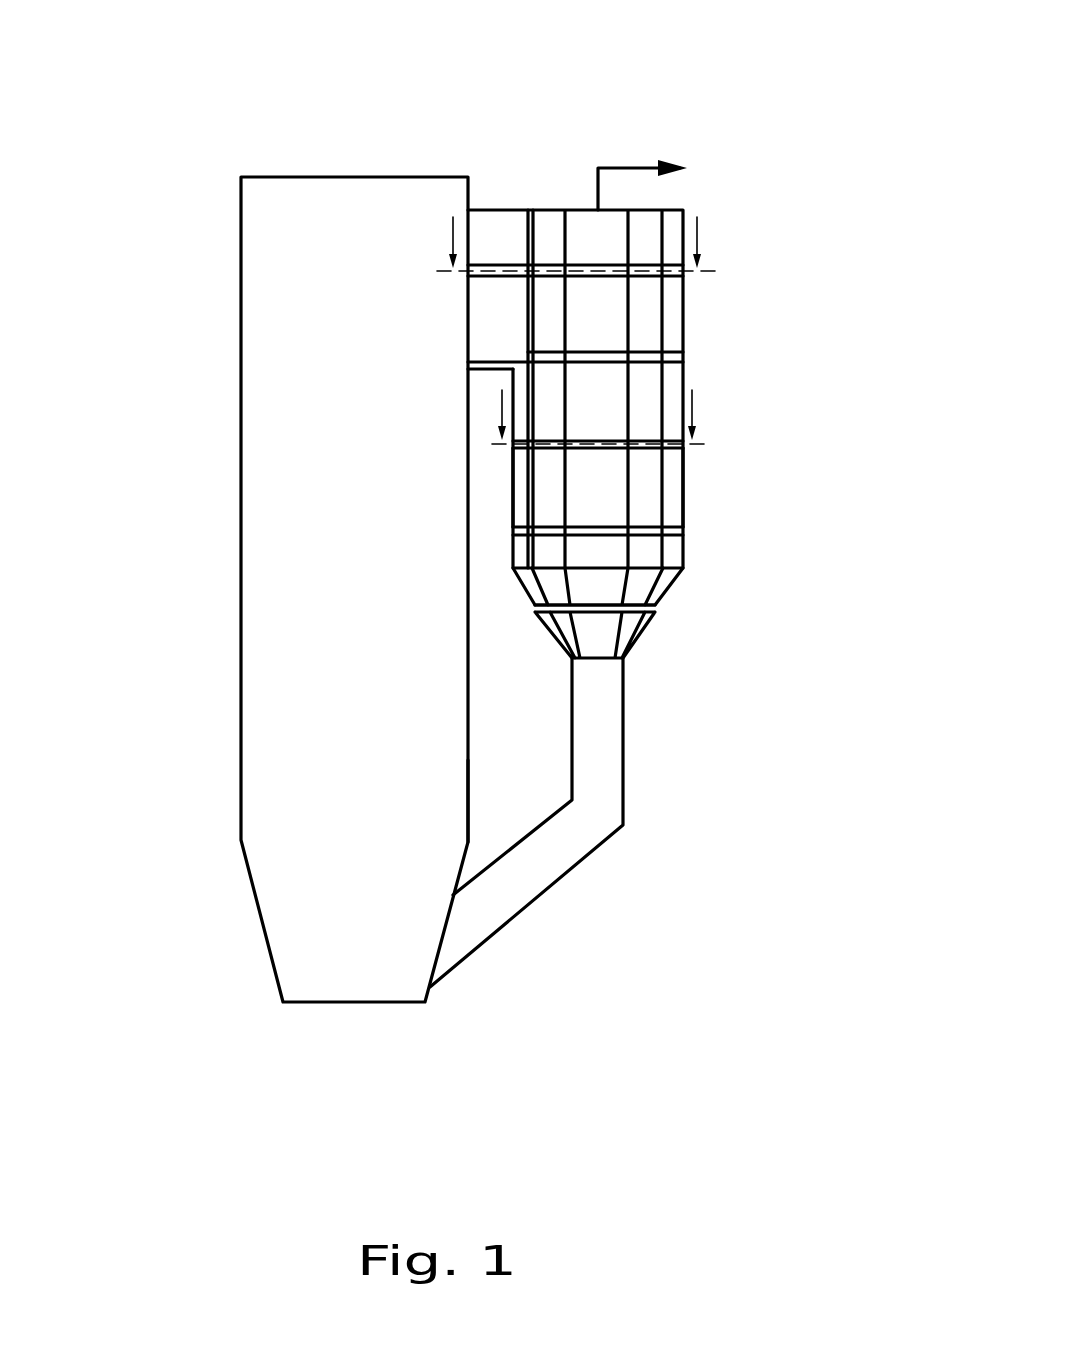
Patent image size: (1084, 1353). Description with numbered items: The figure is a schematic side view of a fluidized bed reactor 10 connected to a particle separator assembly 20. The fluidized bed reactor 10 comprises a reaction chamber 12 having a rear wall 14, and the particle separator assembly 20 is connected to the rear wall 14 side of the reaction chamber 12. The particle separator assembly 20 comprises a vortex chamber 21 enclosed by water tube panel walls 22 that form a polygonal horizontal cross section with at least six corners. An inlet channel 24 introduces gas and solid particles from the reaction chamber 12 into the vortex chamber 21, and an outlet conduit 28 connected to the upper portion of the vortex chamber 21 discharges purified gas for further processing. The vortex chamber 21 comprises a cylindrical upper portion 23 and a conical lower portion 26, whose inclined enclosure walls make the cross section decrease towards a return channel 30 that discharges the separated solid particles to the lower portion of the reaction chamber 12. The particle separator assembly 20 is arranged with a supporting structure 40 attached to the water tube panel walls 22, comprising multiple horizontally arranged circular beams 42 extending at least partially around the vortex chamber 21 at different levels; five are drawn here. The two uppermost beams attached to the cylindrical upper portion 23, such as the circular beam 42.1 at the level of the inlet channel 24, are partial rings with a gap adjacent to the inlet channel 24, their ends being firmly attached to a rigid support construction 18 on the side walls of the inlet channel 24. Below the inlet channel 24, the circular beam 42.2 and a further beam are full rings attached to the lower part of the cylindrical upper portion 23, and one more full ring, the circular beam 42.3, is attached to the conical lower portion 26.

The fluidized bed reactor 10 is at (210, 131).
The reaction chamber 12 is at (365, 523).
The rear wall 14 is at (456, 824).
The rigid support construction 18 is at (500, 275).
The particle separator assembly 20 is at (706, 330).
The vortex chamber 21 is at (597, 512).
The water tube panel walls 22 is at (645, 380).
The cylindrical upper portion 23 is at (645, 470).
The inlet channel 24 is at (492, 227).
The conical lower portion 26 is at (597, 643).
The outlet conduit 28 is at (637, 167).
The return channel 30 is at (570, 838).
The supporting structure 40 is at (643, 265).
The circular beams 42 is at (597, 362).
The circular beam 42.1 is at (605, 280).
The circular beam 42.2 is at (563, 448).
The third stiffening ring 42.3 is at (562, 608).